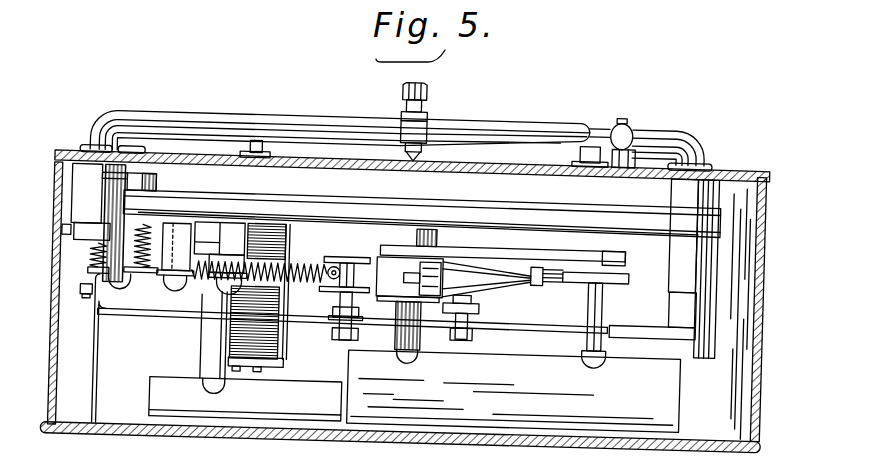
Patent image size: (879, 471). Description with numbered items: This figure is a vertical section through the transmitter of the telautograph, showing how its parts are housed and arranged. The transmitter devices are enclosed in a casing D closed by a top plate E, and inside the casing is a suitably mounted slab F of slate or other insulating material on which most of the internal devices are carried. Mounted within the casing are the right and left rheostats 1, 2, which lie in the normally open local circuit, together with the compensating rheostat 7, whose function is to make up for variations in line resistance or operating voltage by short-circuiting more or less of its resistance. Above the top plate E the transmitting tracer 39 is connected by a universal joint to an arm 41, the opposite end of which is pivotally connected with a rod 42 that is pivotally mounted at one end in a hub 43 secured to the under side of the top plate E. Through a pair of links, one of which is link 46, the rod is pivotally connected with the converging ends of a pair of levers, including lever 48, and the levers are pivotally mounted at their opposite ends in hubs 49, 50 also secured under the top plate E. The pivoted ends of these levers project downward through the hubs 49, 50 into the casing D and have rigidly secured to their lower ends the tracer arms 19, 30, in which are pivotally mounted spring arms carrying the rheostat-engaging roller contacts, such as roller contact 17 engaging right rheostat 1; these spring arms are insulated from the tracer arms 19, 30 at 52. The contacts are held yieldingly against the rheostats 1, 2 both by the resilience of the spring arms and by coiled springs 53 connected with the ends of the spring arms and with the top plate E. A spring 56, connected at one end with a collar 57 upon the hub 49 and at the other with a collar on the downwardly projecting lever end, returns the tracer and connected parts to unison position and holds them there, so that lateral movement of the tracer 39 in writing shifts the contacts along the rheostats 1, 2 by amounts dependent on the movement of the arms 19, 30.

The casing D is at (760, 342).
The top plate E is at (526, 157).
The slab F is at (468, 193).
The right rheostat 1 is at (323, 257).
The left rheostat 2 is at (533, 267).
The rheostat 7 is at (275, 350).
The roller contact 17 is at (372, 283).
The tracer arm 19 is at (186, 312).
The tracer arm 30 is at (645, 312).
The transmitting tracer 39 is at (420, 150).
The arm 41 is at (421, 124).
The rod 42 is at (186, 112).
The hub 43 is at (94, 222).
The link 46 is at (547, 114).
The lever 48 is at (661, 108).
The hub 49 is at (152, 176).
The hub 50 is at (670, 258).
The insulation 52 is at (481, 302).
The coiled spring 53 is at (322, 257).
The spring 56 is at (94, 256).
The collar 57 is at (186, 187).